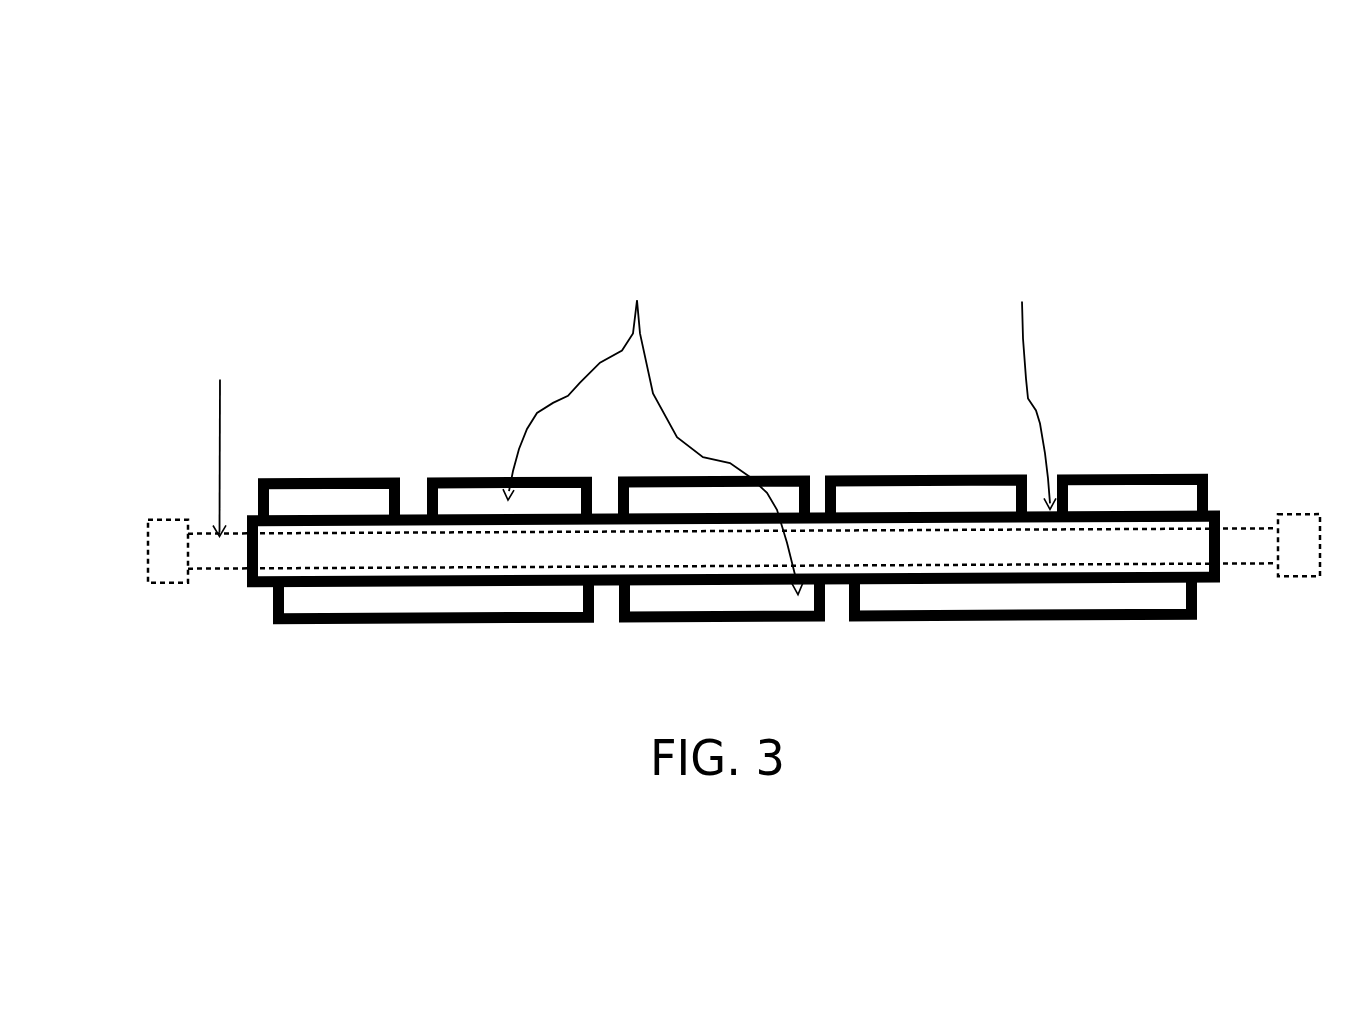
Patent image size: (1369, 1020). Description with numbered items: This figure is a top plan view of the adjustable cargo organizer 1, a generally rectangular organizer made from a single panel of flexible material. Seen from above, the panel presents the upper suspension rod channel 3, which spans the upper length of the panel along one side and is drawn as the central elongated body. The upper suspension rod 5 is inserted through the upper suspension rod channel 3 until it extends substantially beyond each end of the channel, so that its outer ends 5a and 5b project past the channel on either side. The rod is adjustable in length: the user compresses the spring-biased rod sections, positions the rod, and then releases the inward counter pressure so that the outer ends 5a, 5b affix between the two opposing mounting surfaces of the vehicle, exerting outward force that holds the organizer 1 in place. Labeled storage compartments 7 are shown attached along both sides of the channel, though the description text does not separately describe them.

The adjustable cargo organizer 1 is at (126, 214).
The upper suspension rod channel 3 is at (617, 588).
The upper suspension rod 5 is at (230, 572).
The outer end of upper suspension rod 5a is at (1302, 515).
The outer end of upper suspension rod 5b is at (175, 533).
The storage compartments 7 is at (357, 480).